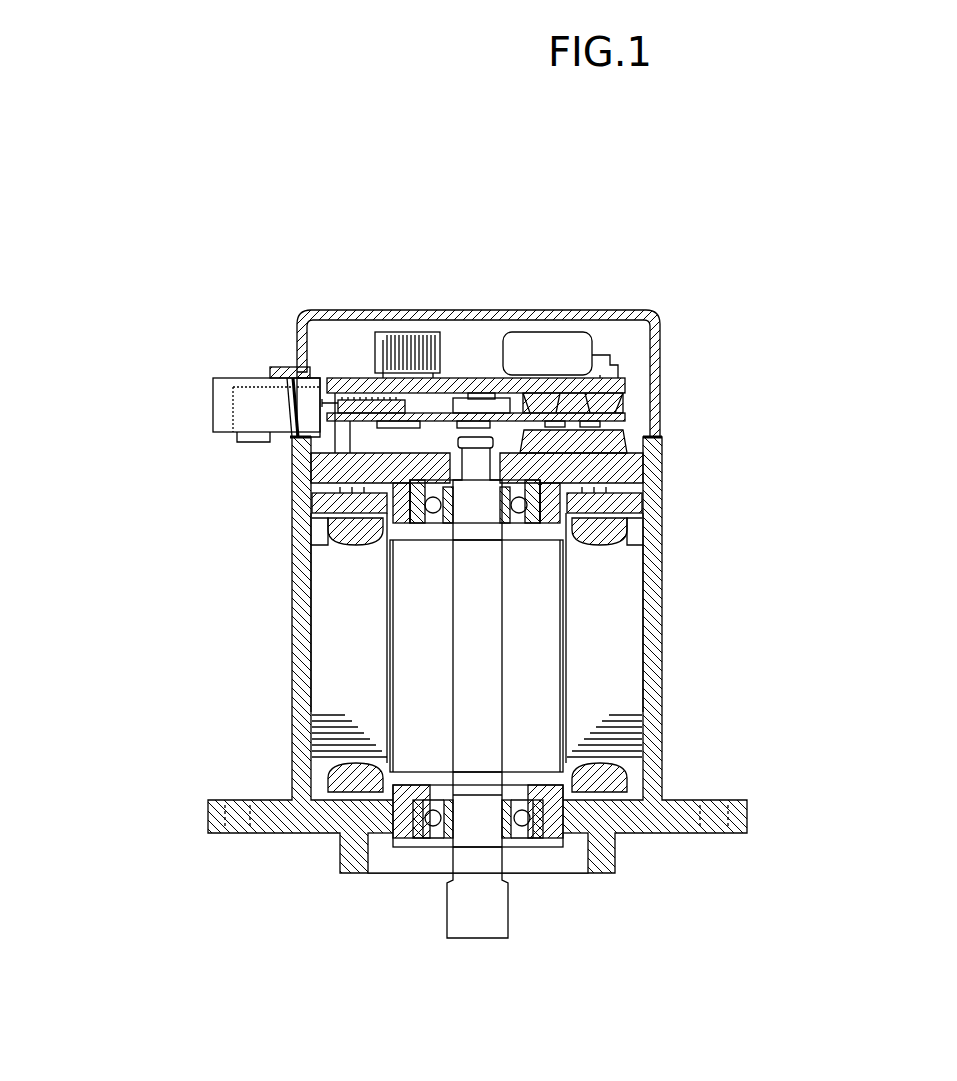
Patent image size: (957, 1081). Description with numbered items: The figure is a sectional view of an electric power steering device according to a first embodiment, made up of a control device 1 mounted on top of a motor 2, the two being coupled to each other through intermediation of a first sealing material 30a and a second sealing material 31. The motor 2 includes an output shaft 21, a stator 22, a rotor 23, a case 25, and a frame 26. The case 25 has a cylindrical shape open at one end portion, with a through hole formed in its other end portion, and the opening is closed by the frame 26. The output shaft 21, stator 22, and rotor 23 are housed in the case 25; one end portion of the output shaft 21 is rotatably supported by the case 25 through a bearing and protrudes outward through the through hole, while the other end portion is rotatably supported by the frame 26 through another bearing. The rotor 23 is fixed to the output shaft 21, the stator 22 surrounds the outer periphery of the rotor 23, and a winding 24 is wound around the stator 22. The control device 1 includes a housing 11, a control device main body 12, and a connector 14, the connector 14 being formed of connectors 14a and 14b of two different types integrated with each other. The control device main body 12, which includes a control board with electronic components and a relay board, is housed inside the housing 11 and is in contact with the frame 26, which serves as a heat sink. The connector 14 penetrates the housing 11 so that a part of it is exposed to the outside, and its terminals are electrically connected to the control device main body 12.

The control device 1 is at (818, 315).
The motor 2 is at (818, 425).
The housing 11 is at (588, 309).
The control device main body 12 is at (625, 413).
The connector 14 is at (183, 427).
The connector 14a is at (212, 396).
The connector 14b is at (233, 413).
The output shaft 21 is at (498, 860).
The stator 22 is at (625, 692).
The rotor 23 is at (398, 636).
The winding 24 is at (650, 560).
The case 25 is at (291, 720).
The frame 26 is at (662, 483).
The first sealing material 30a is at (290, 437).
The second sealing material 31 is at (272, 378).